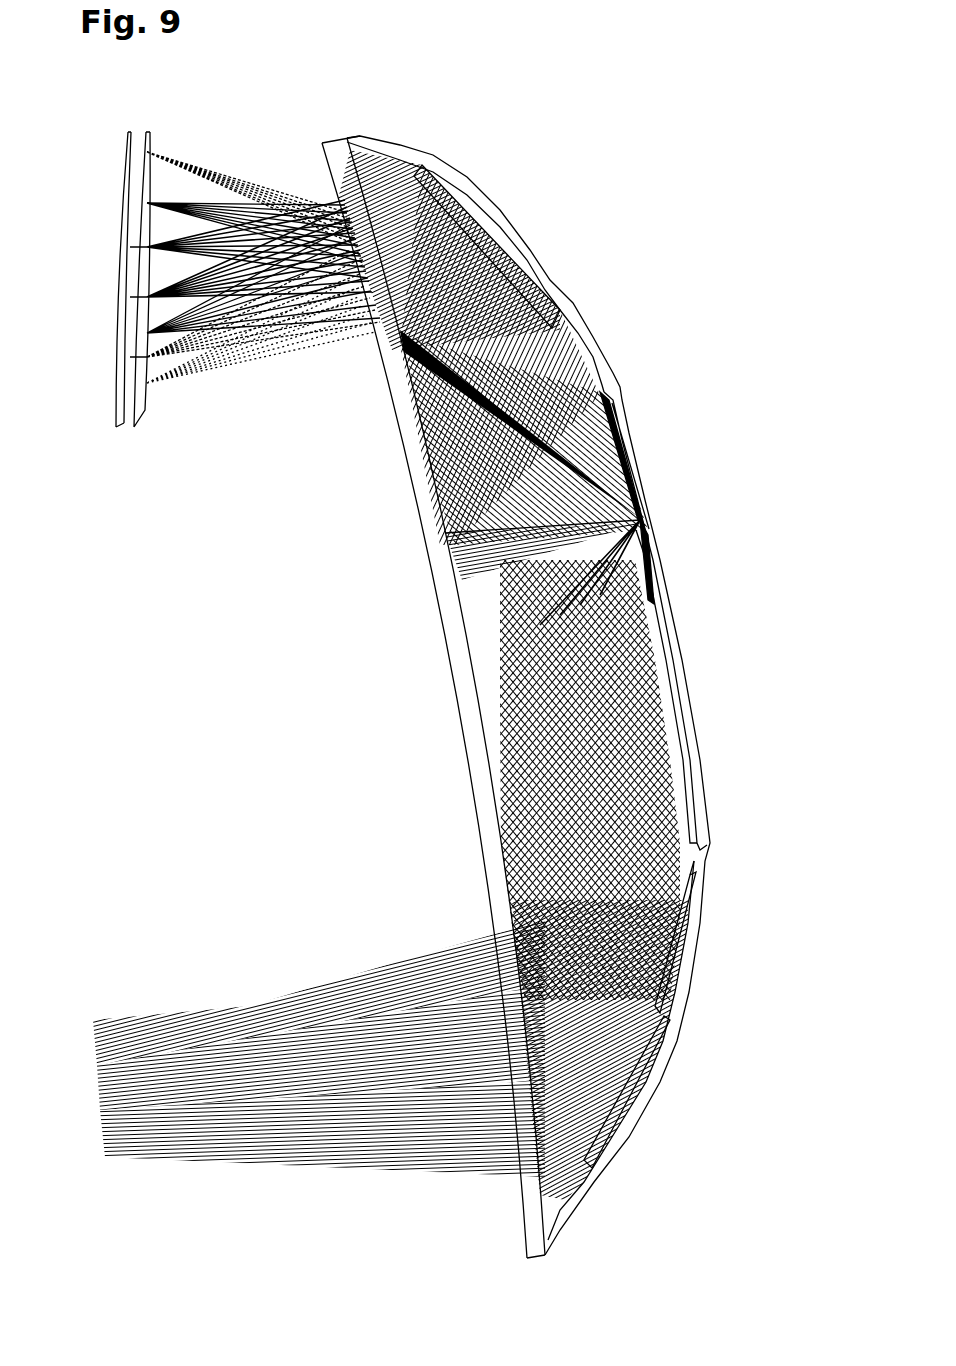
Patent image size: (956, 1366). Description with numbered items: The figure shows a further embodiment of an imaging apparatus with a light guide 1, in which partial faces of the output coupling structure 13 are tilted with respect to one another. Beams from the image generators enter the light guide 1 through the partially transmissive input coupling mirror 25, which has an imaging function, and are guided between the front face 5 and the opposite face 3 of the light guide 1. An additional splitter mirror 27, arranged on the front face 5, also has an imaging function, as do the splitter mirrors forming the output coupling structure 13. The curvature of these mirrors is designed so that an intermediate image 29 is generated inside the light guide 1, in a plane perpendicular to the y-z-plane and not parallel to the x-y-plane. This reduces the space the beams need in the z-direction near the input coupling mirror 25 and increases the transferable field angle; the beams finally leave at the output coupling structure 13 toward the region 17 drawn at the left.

The light guide 1 is at (487, 640).
The front side of spectacle lens 3 is at (487, 793).
The front face 5 is at (708, 853).
The output coupling structure 13 is at (756, 1021).
The eye box 17 is at (105, 1182).
The partially transmissive input coupling mirror 25 is at (487, 228).
The splitter mirror 27 is at (667, 618).
The intermediate image 29 is at (567, 525).